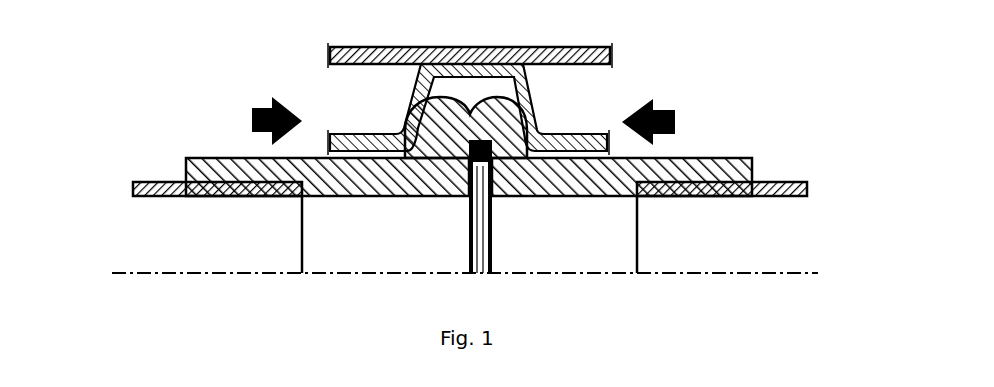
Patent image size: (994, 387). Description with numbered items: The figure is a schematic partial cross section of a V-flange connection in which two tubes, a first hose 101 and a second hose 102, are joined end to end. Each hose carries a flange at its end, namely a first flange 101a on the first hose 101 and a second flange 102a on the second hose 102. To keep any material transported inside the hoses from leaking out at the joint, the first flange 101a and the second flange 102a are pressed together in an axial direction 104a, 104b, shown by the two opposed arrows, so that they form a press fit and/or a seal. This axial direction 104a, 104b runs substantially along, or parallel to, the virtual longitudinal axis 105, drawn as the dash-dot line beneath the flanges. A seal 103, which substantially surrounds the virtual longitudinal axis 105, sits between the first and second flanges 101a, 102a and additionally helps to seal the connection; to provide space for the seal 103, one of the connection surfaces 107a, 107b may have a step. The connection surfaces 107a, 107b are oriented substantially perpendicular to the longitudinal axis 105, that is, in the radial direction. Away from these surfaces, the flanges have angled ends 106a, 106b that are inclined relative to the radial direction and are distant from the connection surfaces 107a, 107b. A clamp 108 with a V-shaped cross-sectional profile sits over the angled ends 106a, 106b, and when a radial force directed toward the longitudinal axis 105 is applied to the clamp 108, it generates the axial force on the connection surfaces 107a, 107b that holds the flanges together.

The first hose 101 is at (148, 181).
The first flange 101a is at (427, 196).
The second hose 102 is at (770, 182).
The second flange 102a is at (555, 197).
The seal 103 is at (484, 164).
The axial direction 104a is at (258, 112).
The axial direction 104b is at (660, 110).
The virtual longitudinal axis 105 is at (745, 273).
The angled end 106a is at (404, 127).
The angled end 106b is at (531, 112).
The connection surface 107a is at (461, 203).
The connection surface 107b is at (446, 219).
The clamp 108 is at (536, 62).